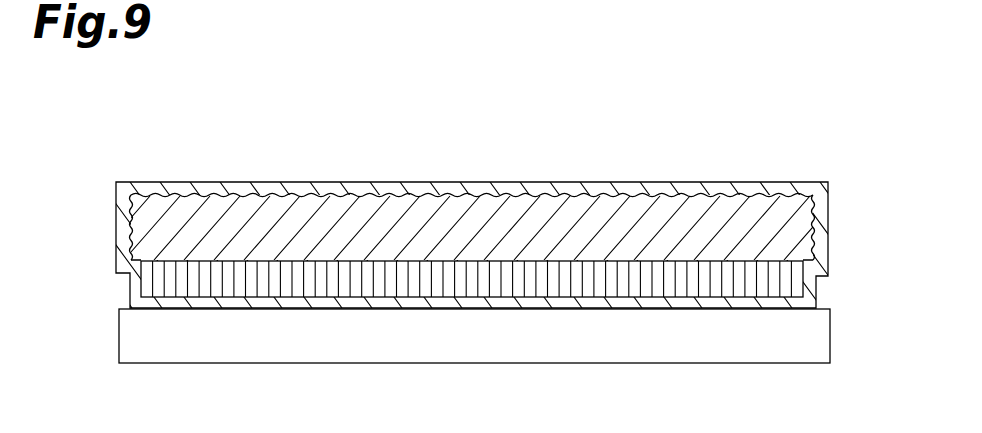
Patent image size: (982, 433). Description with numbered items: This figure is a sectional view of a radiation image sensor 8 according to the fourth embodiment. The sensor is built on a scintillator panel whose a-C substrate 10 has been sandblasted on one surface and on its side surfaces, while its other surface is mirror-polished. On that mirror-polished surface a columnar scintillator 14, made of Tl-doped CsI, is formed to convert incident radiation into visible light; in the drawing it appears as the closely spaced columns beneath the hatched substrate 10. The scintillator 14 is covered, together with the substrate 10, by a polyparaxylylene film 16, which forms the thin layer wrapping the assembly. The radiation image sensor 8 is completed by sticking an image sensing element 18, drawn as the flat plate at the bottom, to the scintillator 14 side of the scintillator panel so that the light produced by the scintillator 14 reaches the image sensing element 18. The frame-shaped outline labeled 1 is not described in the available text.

The radiation image sensor 8 is at (522, 112).
The frame 1 is at (713, 183).
The a-C substrate 10 is at (399, 200).
The columnar scintillator 14 is at (495, 285).
The polyparaxylylene film 16 is at (318, 305).
The image sensing element 18 is at (595, 353).